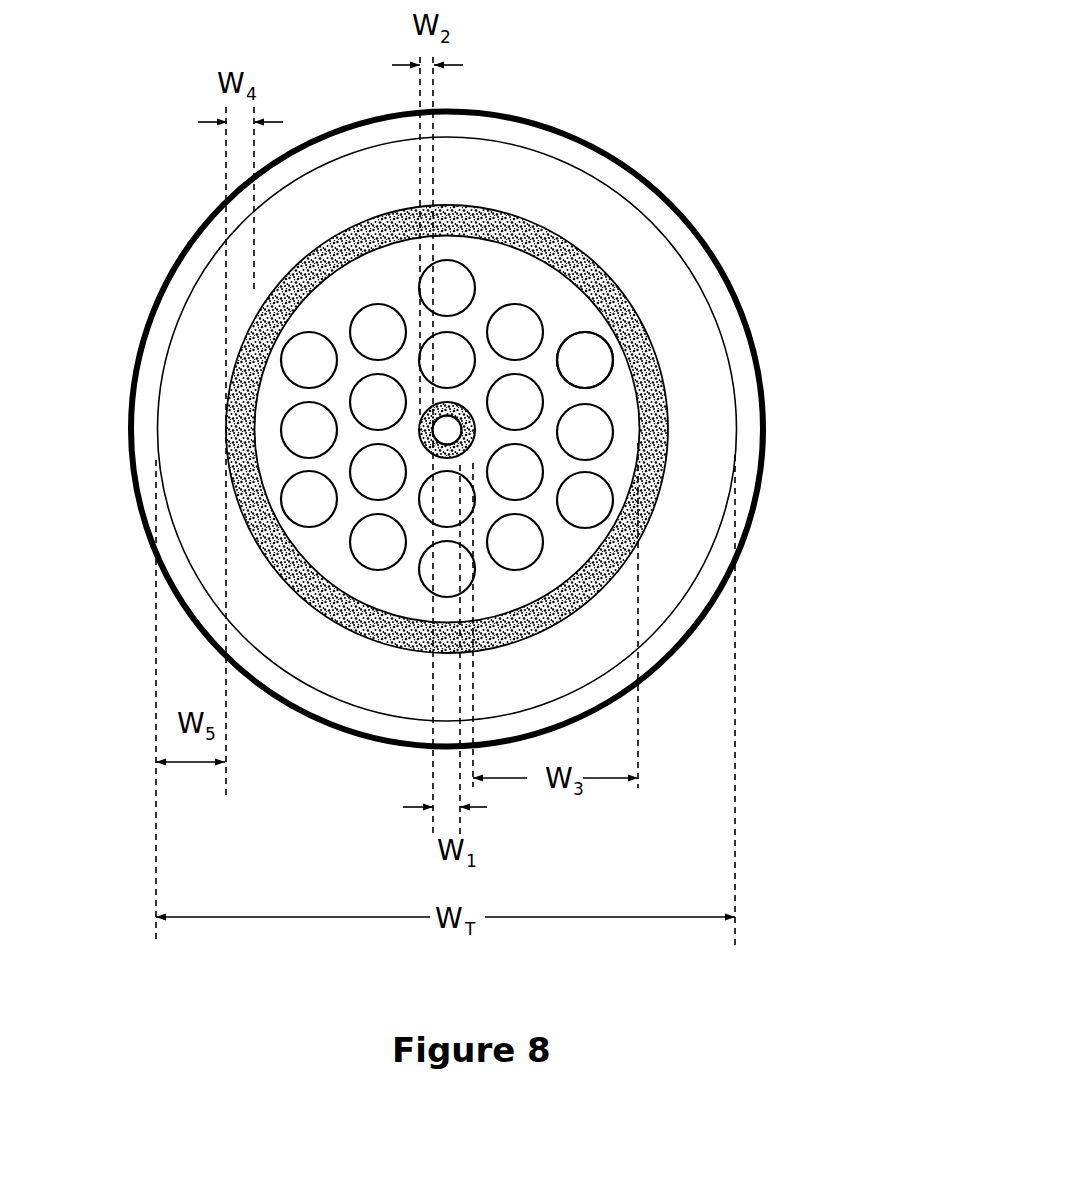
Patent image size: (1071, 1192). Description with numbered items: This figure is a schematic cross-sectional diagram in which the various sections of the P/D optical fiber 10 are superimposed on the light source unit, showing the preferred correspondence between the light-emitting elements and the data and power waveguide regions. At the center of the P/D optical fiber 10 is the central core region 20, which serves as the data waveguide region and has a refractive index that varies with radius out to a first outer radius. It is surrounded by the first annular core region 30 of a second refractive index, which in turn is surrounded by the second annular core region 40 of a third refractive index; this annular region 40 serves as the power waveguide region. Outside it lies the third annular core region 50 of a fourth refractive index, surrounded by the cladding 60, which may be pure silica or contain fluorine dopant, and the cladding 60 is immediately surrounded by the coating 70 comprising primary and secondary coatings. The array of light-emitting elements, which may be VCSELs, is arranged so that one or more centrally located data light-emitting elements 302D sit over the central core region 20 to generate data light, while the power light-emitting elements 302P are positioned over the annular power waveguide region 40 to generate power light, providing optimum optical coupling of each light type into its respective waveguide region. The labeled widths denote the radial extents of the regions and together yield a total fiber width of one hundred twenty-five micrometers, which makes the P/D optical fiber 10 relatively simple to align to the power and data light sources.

The P/D optical fiber 10 is at (124, 231).
The central core region 20 is at (447, 430).
The first annular core region 30 is at (463, 412).
The second annular core region 40 is at (612, 458).
The third annular core region 50 is at (574, 257).
The cladding 60 is at (667, 318).
The coating 70 is at (644, 172).
The power light-emitting elements 302P is at (587, 360).
The data light-emitting element 302D is at (447, 430).